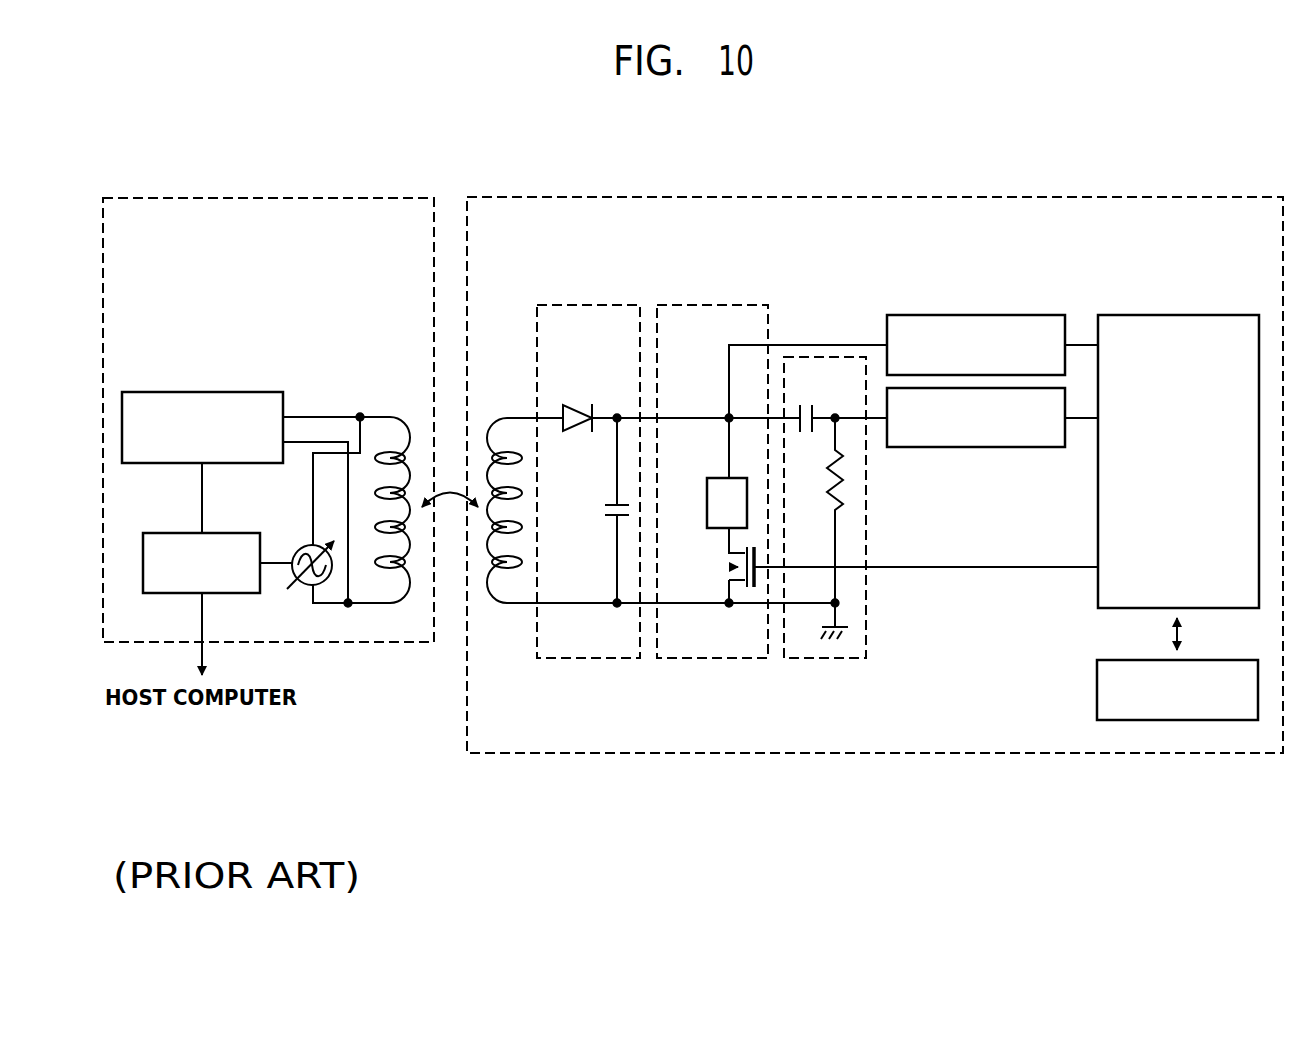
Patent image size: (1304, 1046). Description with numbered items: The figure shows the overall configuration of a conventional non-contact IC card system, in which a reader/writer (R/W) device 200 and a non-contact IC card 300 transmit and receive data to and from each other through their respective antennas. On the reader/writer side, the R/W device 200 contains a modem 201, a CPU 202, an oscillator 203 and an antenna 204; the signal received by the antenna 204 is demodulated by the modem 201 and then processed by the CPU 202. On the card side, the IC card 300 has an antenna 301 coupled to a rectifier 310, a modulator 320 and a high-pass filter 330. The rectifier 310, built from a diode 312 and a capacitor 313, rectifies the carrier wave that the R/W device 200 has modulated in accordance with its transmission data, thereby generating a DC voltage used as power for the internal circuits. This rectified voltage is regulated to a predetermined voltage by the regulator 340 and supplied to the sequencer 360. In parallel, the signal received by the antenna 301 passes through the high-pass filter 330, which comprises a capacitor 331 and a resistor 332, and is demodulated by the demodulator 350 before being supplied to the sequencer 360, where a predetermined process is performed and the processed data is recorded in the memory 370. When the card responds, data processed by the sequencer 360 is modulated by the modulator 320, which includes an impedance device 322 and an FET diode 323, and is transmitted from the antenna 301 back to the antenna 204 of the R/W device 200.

The reader/writer (R/W) device 200 is at (297, 196).
The modem 201 is at (167, 392).
The CPU 202 is at (165, 533).
The oscillator 203 is at (297, 548).
The antenna 204 is at (385, 417).
The non-contact IC card 300 is at (842, 196).
The antenna 301 is at (492, 417).
The rectifier 310 is at (590, 304).
The diode 312 is at (575, 404).
The capacitor 313 is at (603, 508).
The modulator 320 is at (729, 304).
The impedance device 322 is at (708, 478).
The FET diode 323 is at (726, 565).
The high-pass filter (HPF) 330 is at (866, 629).
The capacitor 331 is at (806, 404).
The resistor 332 is at (827, 490).
The regulator 340 is at (994, 314).
The demodulator 350 is at (997, 449).
The sequencer 360 is at (1194, 314).
The memory 370 is at (1097, 690).